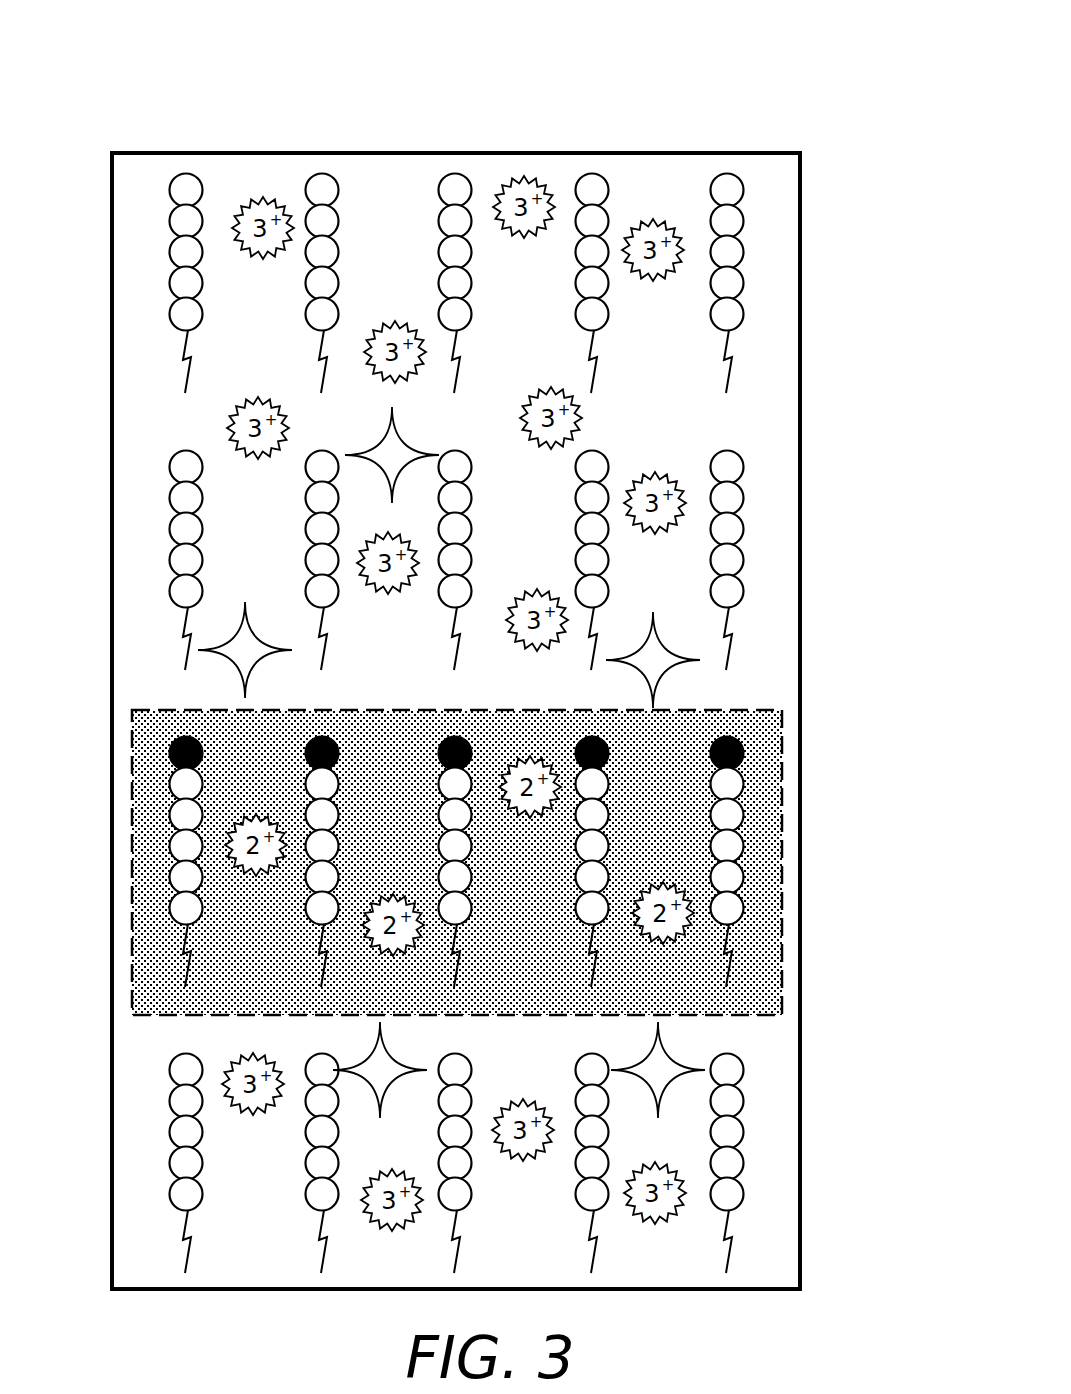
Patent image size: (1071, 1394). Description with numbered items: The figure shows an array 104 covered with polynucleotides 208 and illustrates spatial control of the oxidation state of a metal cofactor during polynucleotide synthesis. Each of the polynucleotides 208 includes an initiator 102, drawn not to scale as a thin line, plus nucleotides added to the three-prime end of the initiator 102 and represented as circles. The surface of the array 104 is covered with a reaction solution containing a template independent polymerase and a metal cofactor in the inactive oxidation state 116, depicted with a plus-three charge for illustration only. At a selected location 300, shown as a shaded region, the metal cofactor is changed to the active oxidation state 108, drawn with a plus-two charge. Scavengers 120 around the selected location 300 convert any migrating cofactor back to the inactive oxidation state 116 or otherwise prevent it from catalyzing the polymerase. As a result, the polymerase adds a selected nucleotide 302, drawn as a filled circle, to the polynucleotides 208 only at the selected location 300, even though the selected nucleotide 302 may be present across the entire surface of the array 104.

The array 104 is at (218, 46).
The inactive oxidation state 116 is at (251, 180).
The polynucleotides 208 is at (597, 166).
The initiator 102 is at (749, 361).
The active oxidation state 108 is at (246, 802).
The scavengers 120 is at (371, 467).
The selected nucleotide 302 is at (748, 742).
The selected location 300 is at (786, 1020).